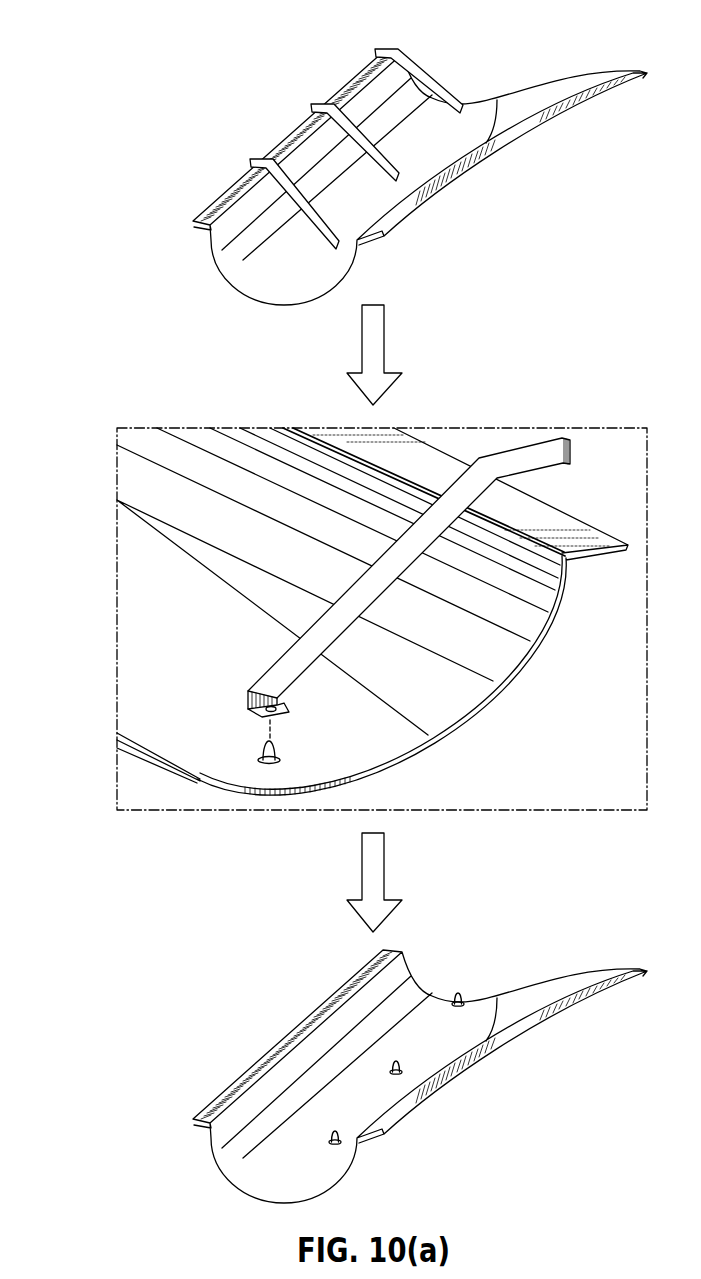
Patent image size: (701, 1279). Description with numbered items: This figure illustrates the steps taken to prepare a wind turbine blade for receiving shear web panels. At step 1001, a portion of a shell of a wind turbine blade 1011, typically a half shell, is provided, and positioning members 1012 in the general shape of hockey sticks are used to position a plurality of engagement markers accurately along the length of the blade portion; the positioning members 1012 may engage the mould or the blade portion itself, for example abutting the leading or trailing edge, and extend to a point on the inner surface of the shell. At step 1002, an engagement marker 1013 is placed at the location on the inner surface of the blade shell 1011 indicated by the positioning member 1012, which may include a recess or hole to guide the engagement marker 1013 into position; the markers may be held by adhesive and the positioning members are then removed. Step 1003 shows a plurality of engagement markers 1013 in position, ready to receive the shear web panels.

The step of providing blade shell portion 1001 is at (130, 211).
The step of placing engagement marker 1002 is at (90, 637).
The step of engagement markers in position 1003 is at (130, 1110).
The wind turbine blade shell 1011 is at (226, 197).
The positioning member 1012 is at (382, 51).
The engagement marker 1013 is at (275, 753).